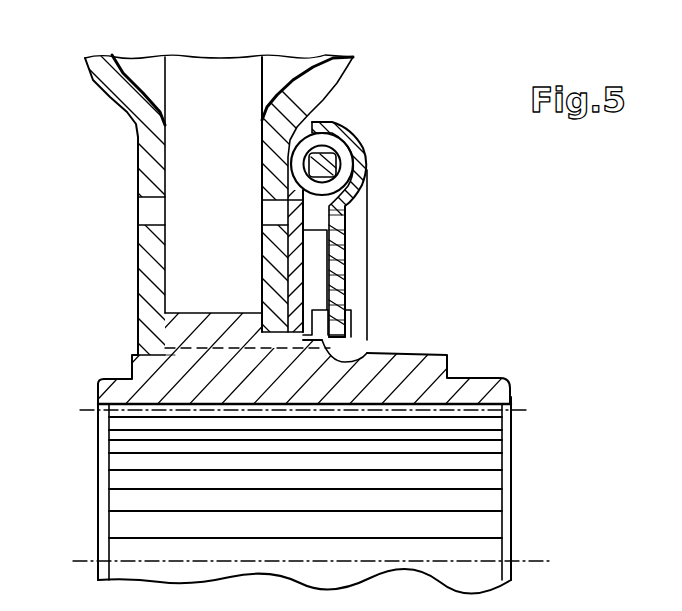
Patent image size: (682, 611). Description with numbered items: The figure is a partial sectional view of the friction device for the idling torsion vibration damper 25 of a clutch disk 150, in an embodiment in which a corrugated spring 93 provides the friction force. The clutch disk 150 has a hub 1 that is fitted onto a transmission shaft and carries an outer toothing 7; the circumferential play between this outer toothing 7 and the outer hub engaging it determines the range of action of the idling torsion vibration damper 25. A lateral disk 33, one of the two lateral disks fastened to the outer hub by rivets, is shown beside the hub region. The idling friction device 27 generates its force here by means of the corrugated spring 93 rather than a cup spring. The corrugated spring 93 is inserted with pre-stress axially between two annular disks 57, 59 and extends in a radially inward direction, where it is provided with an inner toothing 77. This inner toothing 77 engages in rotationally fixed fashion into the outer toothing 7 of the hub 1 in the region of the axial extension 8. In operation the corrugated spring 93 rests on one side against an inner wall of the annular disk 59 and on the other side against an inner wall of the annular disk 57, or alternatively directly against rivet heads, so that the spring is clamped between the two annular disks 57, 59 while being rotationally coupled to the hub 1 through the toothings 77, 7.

The clutch disk 150 is at (369, 74).
The idling torsion vibration damper 25 is at (360, 127).
The lateral disk 33 is at (268, 149).
The annular disk 57 is at (300, 212).
The idling friction device 27 is at (331, 216).
The annular disk 59 is at (346, 247).
The corrugated spring 93 is at (331, 283).
The outer toothing 7 is at (233, 325).
The axial extension 8 is at (373, 355).
The hub 1 is at (445, 372).
The inner toothing 77 is at (297, 346).